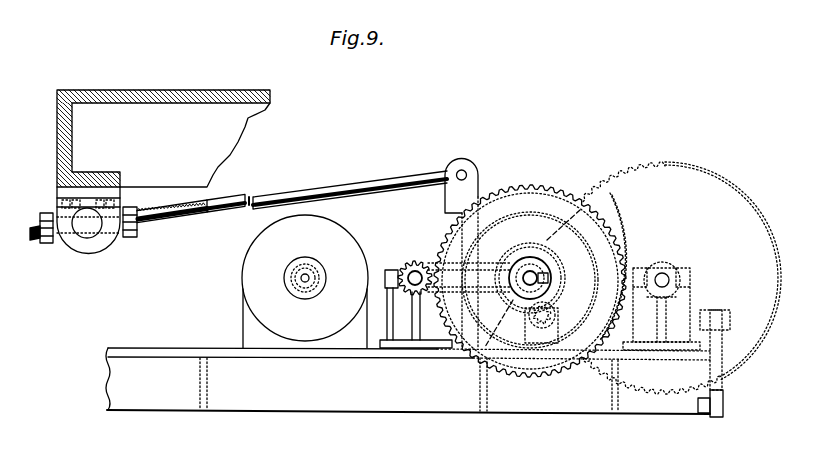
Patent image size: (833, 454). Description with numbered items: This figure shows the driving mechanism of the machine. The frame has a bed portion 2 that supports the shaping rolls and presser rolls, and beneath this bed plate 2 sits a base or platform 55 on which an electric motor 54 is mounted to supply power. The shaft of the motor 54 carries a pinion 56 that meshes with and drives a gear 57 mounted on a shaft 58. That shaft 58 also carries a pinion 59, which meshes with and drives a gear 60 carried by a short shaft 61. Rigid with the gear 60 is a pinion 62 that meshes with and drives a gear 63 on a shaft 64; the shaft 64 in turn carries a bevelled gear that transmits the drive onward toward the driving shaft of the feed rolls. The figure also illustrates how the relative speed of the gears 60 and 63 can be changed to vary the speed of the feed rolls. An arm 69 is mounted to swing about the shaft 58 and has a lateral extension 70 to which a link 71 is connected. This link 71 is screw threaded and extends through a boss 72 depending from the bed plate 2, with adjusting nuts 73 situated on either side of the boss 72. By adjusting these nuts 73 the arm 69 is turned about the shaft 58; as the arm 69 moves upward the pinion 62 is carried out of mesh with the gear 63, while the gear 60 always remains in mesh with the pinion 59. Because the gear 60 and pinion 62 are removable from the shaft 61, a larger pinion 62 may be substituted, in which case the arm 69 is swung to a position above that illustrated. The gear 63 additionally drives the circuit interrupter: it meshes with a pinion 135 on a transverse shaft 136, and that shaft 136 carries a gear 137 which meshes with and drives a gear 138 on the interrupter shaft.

The bed portion 2 is at (123, 92).
The electric motor 54 is at (246, 258).
The base or platform 55 is at (290, 358).
The pinion 56 is at (291, 283).
The gear 57 is at (360, 207).
The shaft 58 is at (418, 276).
The pinion 59 is at (402, 268).
The gear 60 is at (505, 190).
The short shaft 61 is at (536, 277).
The pinion 62 is at (535, 262).
The gear 63 is at (656, 167).
The shaft 64 is at (667, 278).
The arm 69 is at (497, 296).
The lateral extension 70 is at (444, 214).
The link 71 is at (237, 196).
The boss 72 is at (82, 253).
The adjusting nuts 73 is at (45, 214).
The pinion 135 is at (548, 323).
The transverse shaft 136 is at (538, 322).
The gear 137 is at (580, 243).
The gear 138 is at (578, 245).